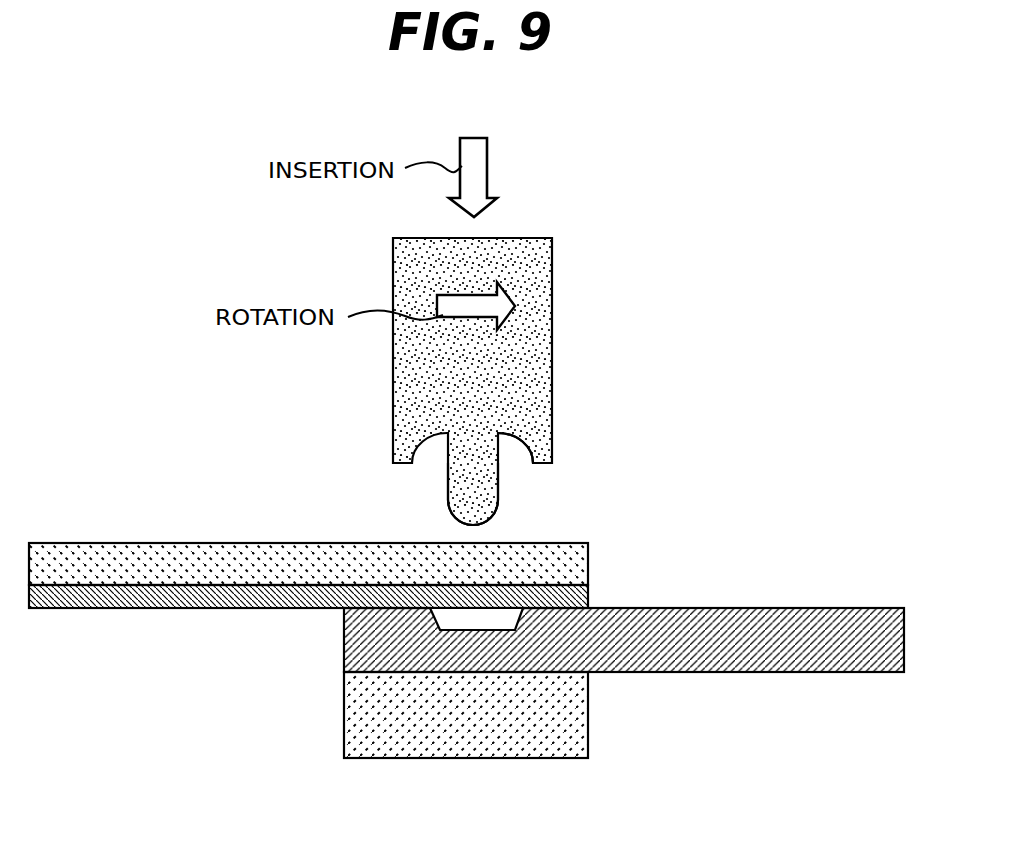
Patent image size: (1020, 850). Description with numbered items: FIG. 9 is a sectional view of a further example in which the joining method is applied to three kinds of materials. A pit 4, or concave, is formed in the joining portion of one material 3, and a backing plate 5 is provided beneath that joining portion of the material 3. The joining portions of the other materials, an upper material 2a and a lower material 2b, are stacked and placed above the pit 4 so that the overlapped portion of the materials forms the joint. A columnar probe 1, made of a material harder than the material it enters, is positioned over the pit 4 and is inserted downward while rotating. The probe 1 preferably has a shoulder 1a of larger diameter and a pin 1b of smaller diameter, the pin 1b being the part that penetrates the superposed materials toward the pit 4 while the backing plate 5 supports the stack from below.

The probe 1 is at (520, 347).
The shoulder 1a is at (537, 441).
The pin 1b is at (490, 497).
The material 2a is at (170, 553).
The material 2b is at (108, 590).
The material 3 is at (788, 657).
The pit 4 is at (443, 620).
The backing plate 5 is at (532, 730).